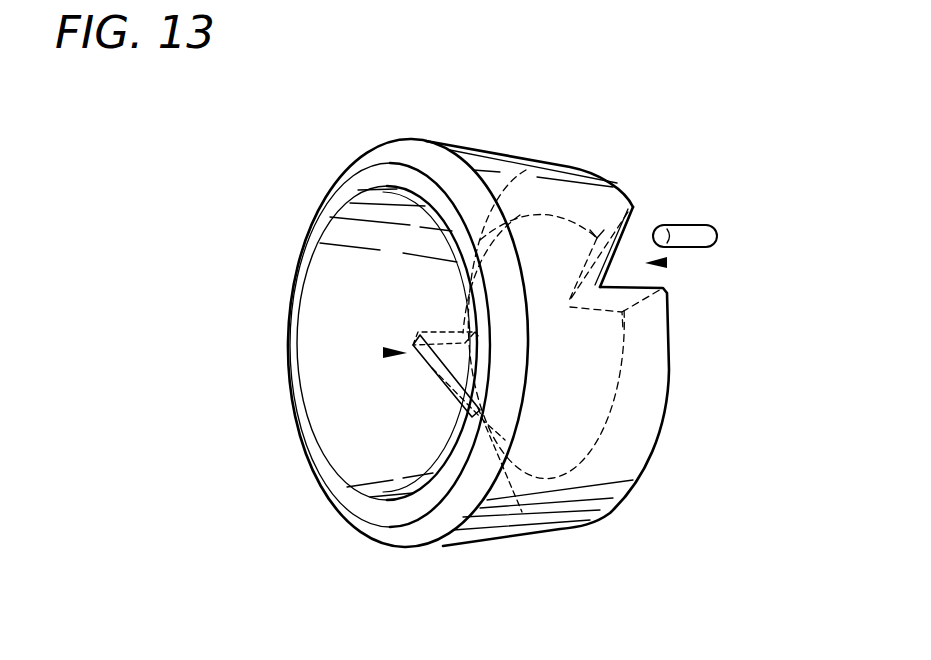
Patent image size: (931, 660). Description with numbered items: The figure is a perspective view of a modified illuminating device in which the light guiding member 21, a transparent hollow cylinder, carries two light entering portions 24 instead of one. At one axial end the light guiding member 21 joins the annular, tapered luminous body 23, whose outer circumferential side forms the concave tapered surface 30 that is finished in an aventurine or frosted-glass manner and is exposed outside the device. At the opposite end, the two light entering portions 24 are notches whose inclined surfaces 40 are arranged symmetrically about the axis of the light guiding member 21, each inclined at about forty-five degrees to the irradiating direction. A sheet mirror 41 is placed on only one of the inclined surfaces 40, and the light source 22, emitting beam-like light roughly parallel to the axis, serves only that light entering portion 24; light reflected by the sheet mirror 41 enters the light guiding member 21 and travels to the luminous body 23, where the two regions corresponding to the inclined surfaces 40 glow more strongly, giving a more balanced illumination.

The light guiding member 21 is at (517, 133).
The light source 22 is at (690, 226).
The luminous body 23 is at (426, 141).
The light entering portion 24 is at (666, 263).
The tapered surface 30 is at (442, 522).
The inclined surface 40 is at (607, 230).
The sheet mirror 41 is at (643, 220).